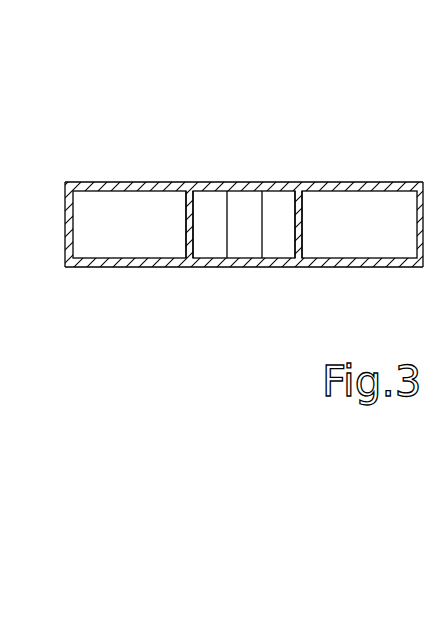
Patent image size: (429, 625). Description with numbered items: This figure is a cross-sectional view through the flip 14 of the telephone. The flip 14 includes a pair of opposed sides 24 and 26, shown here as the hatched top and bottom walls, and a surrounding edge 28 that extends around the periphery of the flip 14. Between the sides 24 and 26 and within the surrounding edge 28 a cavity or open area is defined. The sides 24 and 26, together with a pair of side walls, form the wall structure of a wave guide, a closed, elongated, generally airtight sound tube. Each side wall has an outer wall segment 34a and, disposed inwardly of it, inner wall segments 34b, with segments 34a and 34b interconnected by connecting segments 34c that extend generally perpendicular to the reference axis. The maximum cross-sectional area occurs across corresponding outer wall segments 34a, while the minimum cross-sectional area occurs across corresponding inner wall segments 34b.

The flip 14 is at (299, 71).
The side 24 is at (113, 182).
The side 26 is at (112, 267).
The surrounding edge 28 is at (64, 214).
The outer wall segment 34a is at (186, 224).
The inner wall segment 34b is at (230, 218).
The connecting segment 34c is at (208, 202).